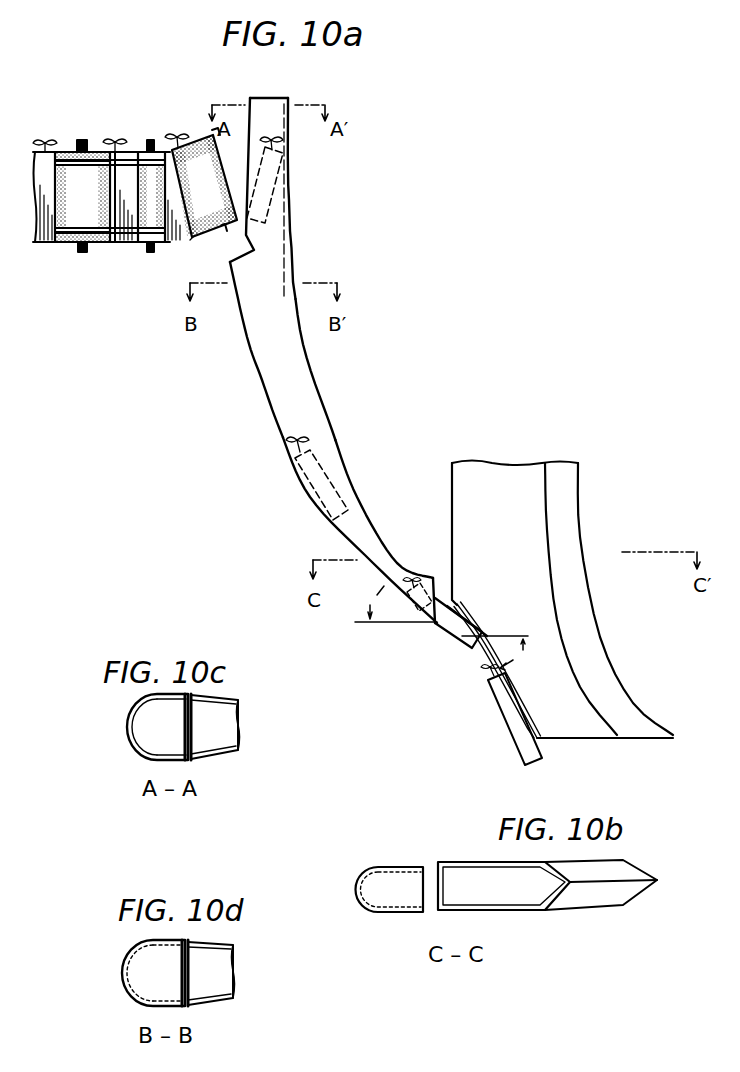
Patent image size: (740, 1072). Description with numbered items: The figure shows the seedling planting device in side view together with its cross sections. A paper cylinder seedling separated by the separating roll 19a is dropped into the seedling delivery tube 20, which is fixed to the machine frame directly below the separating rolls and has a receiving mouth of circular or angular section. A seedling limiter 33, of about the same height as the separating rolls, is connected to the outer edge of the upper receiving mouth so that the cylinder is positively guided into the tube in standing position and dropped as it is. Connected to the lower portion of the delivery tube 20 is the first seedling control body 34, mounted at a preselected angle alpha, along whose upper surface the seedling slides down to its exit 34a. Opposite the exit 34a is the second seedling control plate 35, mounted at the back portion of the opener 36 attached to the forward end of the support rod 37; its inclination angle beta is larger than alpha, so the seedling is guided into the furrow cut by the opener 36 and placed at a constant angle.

In FIG. 10A, the separating roll 19a is at (211, 237).
In FIG. 10A, the seedling delivery tube 20 is at (247, 270).
In FIG. 10A, the seedling limiter 33 is at (281, 210).
In FIG. 10A, the first seedling control body 34 is at (338, 528).
In FIG. 10B, the first seedling control body 34 is at (378, 866).
In FIG. 10A, the exit of the first seedling control body 34a is at (433, 585).
In FIG. 10A, the second seedling control plate 35 is at (480, 651).
In FIG. 10B, the second seedling control plate 35 is at (438, 866).
In FIG. 10A, the opener 36 is at (567, 728).
In FIG. 10B, the opener 36 is at (572, 898).
In FIG. 10A, the support rod 37 is at (532, 478).